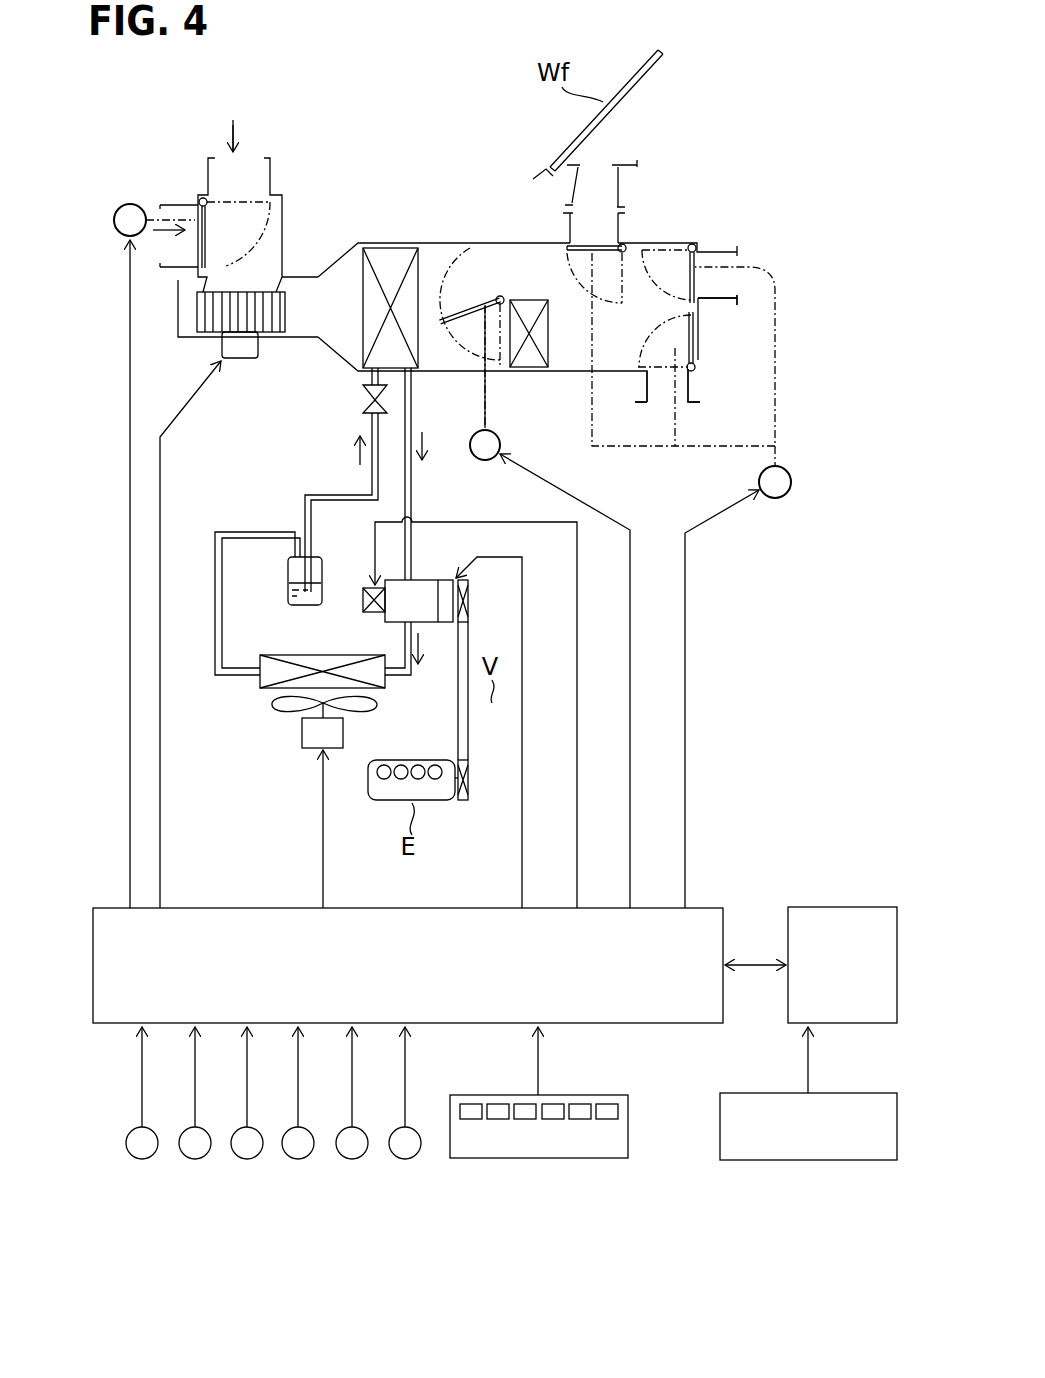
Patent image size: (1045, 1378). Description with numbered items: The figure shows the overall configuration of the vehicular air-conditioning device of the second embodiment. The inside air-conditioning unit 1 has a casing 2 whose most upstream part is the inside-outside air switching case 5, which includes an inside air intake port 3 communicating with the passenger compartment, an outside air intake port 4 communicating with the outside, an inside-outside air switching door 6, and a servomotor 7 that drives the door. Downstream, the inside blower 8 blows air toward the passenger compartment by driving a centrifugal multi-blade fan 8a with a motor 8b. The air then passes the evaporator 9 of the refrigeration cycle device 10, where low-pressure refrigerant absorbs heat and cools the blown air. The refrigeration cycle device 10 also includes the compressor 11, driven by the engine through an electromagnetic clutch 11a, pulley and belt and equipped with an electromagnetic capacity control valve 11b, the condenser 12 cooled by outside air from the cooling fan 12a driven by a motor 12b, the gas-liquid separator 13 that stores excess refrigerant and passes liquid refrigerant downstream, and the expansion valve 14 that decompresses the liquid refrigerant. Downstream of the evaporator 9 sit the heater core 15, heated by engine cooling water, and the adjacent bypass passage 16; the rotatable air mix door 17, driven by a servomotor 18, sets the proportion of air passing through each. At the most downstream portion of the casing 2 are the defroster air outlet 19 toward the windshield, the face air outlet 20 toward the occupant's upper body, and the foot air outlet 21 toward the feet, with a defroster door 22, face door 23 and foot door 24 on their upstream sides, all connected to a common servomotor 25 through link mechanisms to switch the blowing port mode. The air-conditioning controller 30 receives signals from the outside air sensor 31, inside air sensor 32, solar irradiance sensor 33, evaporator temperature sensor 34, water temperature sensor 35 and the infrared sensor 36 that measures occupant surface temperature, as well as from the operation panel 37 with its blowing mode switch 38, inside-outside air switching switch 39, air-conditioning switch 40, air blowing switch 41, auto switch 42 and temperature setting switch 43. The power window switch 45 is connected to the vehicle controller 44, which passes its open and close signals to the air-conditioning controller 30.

The inside air-conditioning unit 1 is at (527, 275).
The casing 2 is at (492, 240).
The inside air intake port 3 is at (160, 264).
The outside air intake port 4 is at (252, 158).
The inside-outside air switching case 5 is at (283, 204).
The inside-outside air switching door 6 is at (207, 243).
The servomotor 7 is at (130, 203).
The inside blower 8 is at (198, 594).
The centrifugal multi-blade fan 8a is at (197, 318).
The motor 8b is at (240, 358).
The evaporator 9 is at (388, 267).
The refrigeration cycle device 10 is at (376, 638).
The compressor 11 is at (451, 712).
The electromagnetic clutch 11a is at (445, 580).
The electromagnetic capacity control valve 11b is at (363, 600).
The condenser 12 is at (292, 655).
The cooling fan 12a is at (270, 701).
The motor 12b is at (302, 738).
The gas-liquid separator 13 is at (288, 577).
The expansion valve 14 is at (363, 388).
The heater core 15 is at (550, 340).
The bypass passage 16 is at (527, 267).
The air mix door 17 is at (462, 320).
The servomotor 18 is at (502, 443).
The defroster air outlet 19 is at (597, 229).
The face air outlet 20 is at (720, 293).
The foot air outlet 21 is at (660, 388).
The defroster door 22 is at (582, 240).
The face door 23 is at (697, 275).
The foot door 24 is at (697, 338).
The servomotor 25 is at (792, 482).
The air-conditioning controller 30 is at (222, 907).
The outside air sensor 31 is at (142, 1160).
The inside air sensor 32 is at (195, 1160).
The solar irradiance sensor 33 is at (247, 1160).
The evaporator temperature sensor 34 is at (298, 1160).
The water temperature sensor 35 is at (352, 1160).
The infrared sensor 36 is at (405, 1160).
The operation panel 37 is at (538, 1127).
The blowing mode switch 38 is at (472, 1104).
The inside-outside air switching switch 39 is at (498, 1104).
The air-conditioning switch 40 is at (525, 1104).
The air blowing switch 41 is at (553, 1104).
The auto switch 42 is at (582, 1104).
The temperature setting switch 43 is at (607, 1104).
The vehicle controller 44 is at (835, 906).
The power window switch 45 is at (765, 1162).